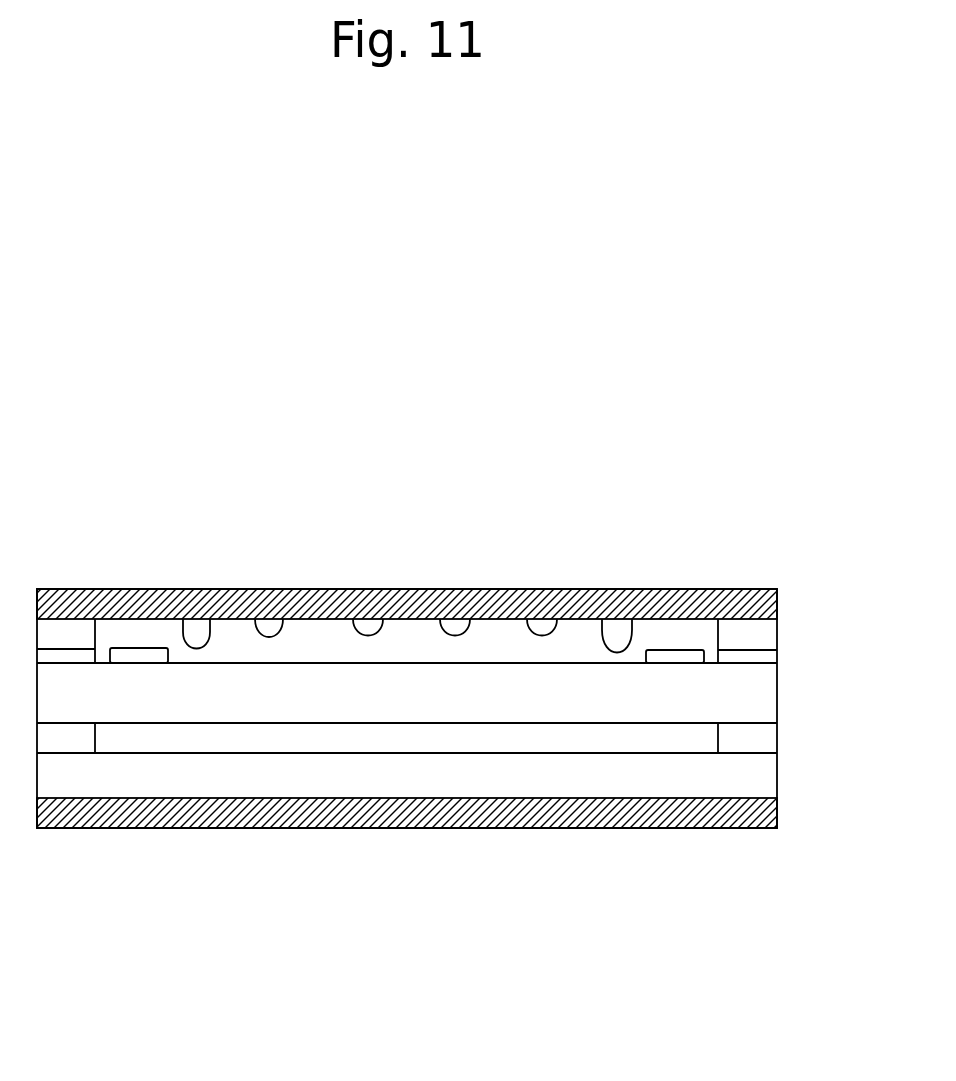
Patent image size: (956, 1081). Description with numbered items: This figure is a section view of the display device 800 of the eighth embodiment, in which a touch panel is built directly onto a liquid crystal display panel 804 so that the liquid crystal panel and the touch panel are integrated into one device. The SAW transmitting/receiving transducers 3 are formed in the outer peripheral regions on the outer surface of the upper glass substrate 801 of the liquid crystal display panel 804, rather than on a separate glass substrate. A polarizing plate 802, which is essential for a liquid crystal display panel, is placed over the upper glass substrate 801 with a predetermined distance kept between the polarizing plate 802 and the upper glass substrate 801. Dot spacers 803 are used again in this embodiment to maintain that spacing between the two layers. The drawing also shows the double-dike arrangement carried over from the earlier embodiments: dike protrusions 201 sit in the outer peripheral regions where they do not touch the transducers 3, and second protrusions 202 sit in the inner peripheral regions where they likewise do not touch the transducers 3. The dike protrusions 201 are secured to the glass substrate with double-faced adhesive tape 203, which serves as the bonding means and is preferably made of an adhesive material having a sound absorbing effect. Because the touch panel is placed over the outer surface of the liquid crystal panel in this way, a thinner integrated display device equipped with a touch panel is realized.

The display device 800 is at (418, 408).
The upper glass substrate 801 is at (557, 707).
The polarizing plate 802 is at (370, 590).
The dot spacers 803 is at (268, 634).
The liquid crystal display panel 804 is at (788, 665).
The dike protrusions 201 is at (747, 637).
The second protrusions 202 is at (613, 633).
The double-faced adhesive tape 203 is at (65, 657).
The SAW transmitting/receiving transducers 3 is at (155, 657).